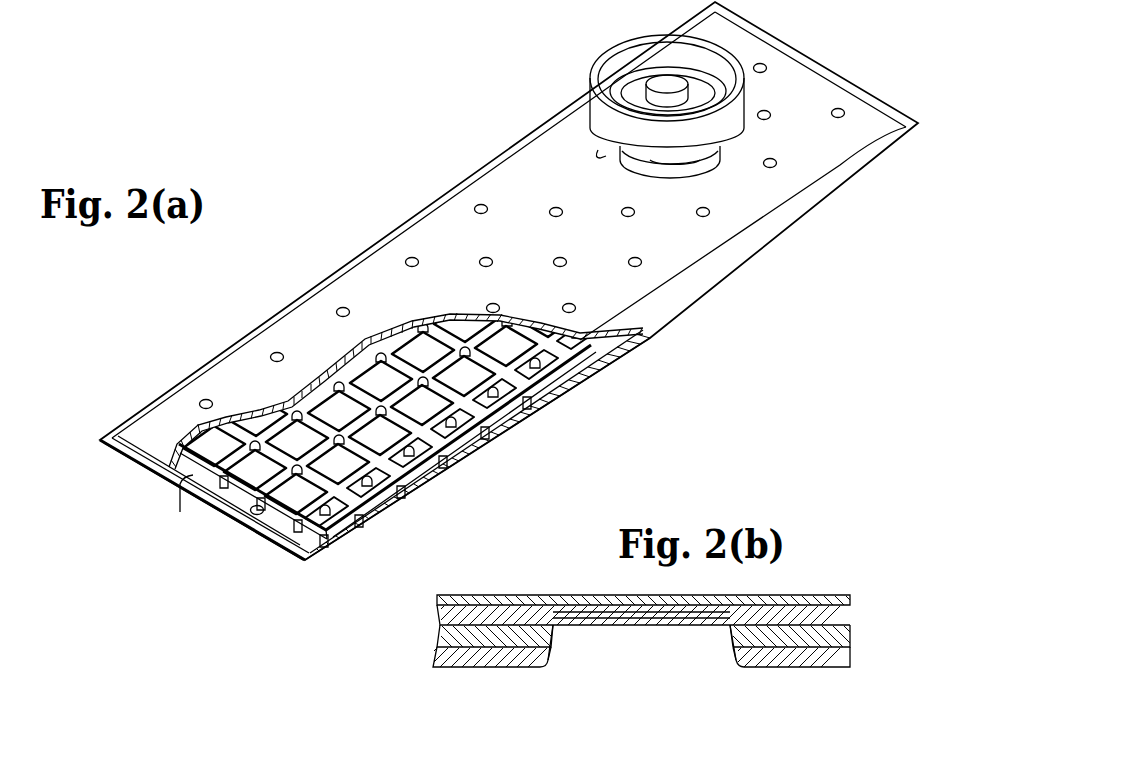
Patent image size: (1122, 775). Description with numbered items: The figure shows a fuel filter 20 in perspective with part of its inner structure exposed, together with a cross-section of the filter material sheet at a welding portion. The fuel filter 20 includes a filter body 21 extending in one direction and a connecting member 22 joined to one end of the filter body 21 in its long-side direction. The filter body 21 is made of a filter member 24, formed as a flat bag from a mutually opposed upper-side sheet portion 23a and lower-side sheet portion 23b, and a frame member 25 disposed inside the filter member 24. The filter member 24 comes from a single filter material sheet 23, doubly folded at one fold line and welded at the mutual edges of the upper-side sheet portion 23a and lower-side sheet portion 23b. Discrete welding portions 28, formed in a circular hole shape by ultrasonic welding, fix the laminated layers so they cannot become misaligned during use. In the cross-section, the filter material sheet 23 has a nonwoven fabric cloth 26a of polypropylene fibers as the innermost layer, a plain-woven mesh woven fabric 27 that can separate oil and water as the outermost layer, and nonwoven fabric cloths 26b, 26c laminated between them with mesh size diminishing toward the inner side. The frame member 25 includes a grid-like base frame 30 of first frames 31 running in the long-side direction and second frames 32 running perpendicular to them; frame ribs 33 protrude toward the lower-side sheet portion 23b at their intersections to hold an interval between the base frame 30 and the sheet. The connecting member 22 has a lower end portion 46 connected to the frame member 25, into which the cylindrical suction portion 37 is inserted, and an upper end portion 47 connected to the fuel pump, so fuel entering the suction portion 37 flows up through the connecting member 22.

In FIG. 2A, the fuel filter 20 is at (297, 122).
In FIG. 2A, the connecting member 22 is at (590, 100).
In FIG. 2A, the filter material sheet 23 is at (107, 487).
In FIG. 2A, the upper-side sheet portion 23a is at (148, 450).
In FIG. 2A, the lower-side sheet portion 23b is at (193, 480).
In FIG. 2A, the welding portions 28 is at (482, 204).
In FIG. 2B, the welding portions 28 is at (669, 638).
In FIG. 2A, the upper end portion 47 is at (612, 55).
In FIG. 2A, the suction portion 37 is at (663, 78).
In FIG. 2A, the lower end portion 46 is at (698, 168).
In FIG. 2A, the filter body 21 is at (643, 377).
In FIG. 2A, the filter member 24 is at (584, 345).
In FIG. 2A, the frame member 25 is at (523, 379).
In FIG. 2A, the base frame 30 is at (497, 473).
In FIG. 2A, the first frames 31 is at (395, 452).
In FIG. 2A, the second frames 32 is at (400, 462).
In FIG. 2A, the frame ribs 33 is at (227, 486).
In FIG. 2B, the mesh woven fabric 27 is at (851, 597).
In FIG. 2B, the nonwoven fabric cloth 26a is at (853, 661).
In FIG. 2B, the nonwoven fabric cloth 26b is at (853, 640).
In FIG. 2B, the nonwoven fabric cloth 26c is at (853, 615).